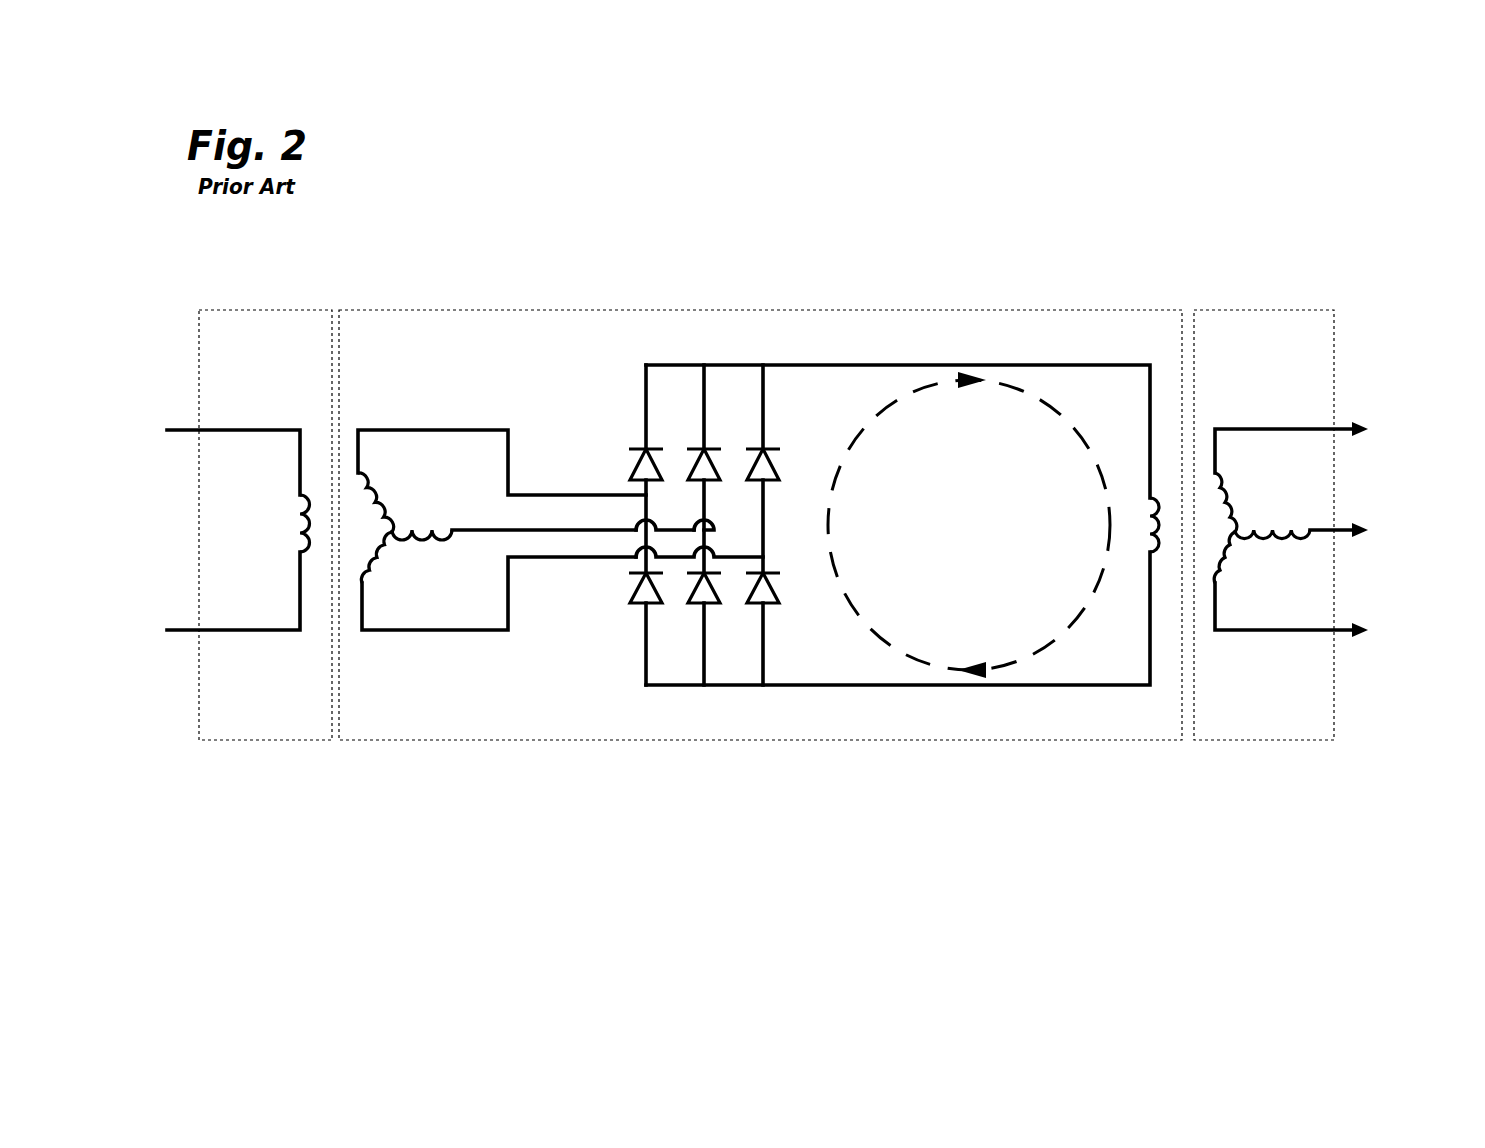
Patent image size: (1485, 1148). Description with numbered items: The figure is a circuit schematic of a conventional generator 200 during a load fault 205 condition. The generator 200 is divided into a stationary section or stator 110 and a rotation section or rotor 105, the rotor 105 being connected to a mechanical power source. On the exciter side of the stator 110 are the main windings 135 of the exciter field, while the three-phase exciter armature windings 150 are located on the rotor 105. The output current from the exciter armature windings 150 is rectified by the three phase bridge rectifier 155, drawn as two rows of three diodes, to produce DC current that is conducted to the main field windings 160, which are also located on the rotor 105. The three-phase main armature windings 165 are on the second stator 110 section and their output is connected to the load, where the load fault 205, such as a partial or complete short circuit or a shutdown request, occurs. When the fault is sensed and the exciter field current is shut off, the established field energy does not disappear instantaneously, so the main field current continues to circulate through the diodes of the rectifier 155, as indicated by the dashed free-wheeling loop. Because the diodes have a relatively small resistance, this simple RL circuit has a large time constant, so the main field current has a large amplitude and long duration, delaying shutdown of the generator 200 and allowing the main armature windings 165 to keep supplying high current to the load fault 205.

The generator 200 is at (490, 190).
The stator 110 is at (276, 726).
The main windings 135 is at (299, 524).
The rotor 105 is at (815, 726).
The exciter armature windings 150 is at (383, 538).
The three phase bridge rectifier 155 is at (612, 458).
The main field windings 160 is at (1148, 552).
The main armature windings 165 is at (1232, 542).
The load fault 205 is at (1455, 579).